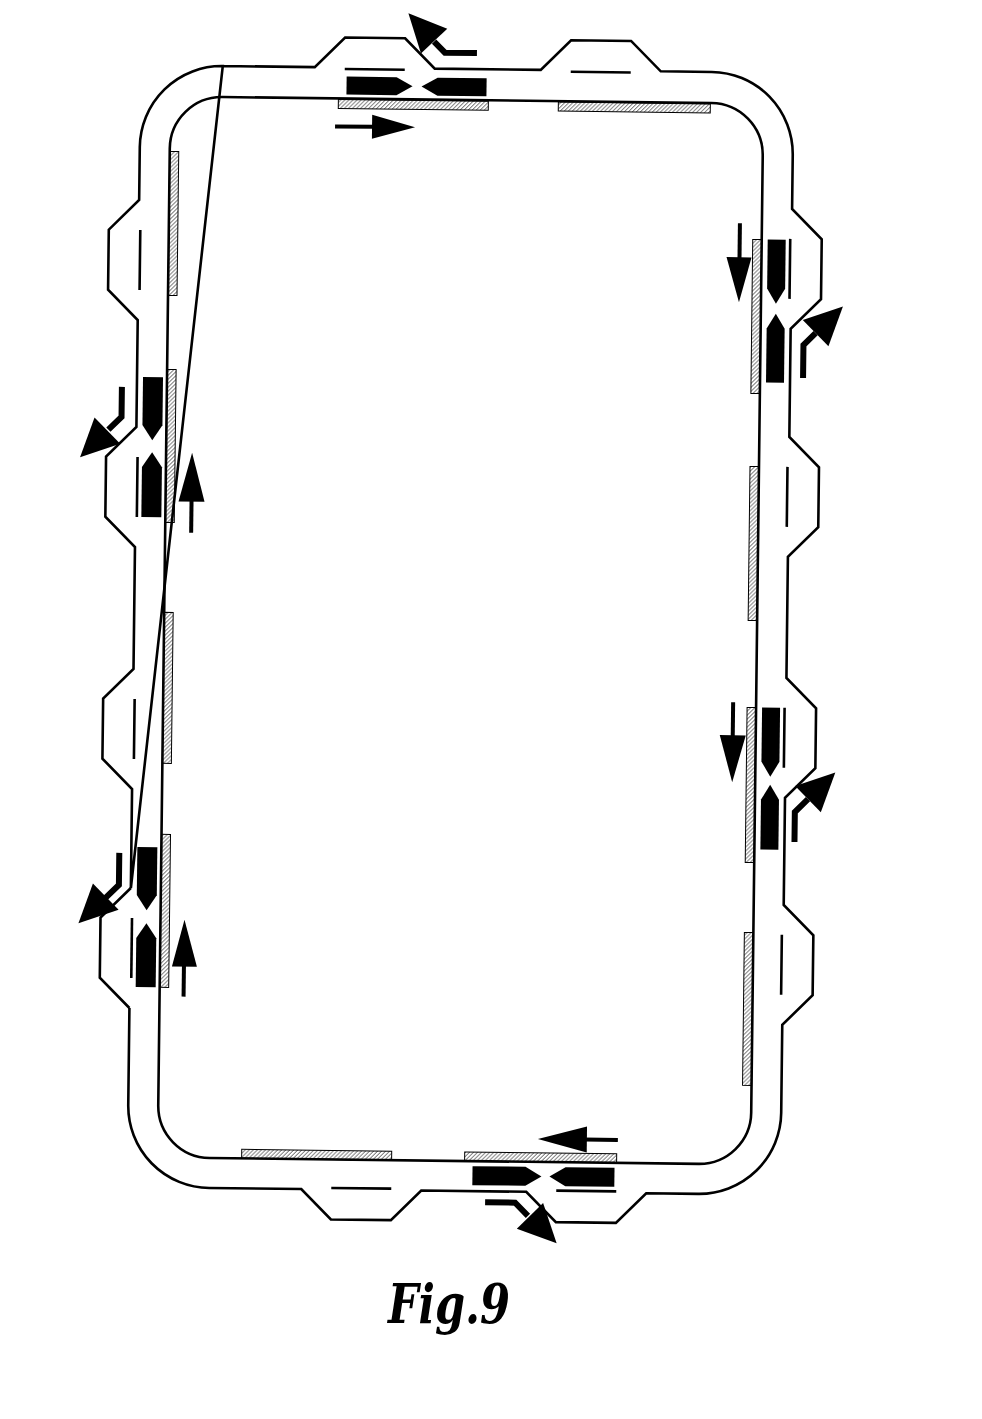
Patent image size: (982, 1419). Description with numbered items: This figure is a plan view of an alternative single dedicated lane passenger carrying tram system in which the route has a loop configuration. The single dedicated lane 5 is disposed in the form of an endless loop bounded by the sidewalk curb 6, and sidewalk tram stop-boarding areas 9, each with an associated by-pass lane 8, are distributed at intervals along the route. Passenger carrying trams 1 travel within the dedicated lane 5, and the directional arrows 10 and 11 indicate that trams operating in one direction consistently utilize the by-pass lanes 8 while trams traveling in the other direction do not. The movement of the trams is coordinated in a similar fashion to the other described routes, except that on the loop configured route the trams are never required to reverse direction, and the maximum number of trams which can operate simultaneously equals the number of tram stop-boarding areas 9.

The passenger carrying tram 1 is at (160, 886).
The single dedicated lane 5 is at (158, 1054).
The sidewalk curb 6 is at (164, 819).
The by-pass lane 8 is at (124, 957).
The sidewalk tram stop-boarding area 9 is at (176, 852).
The directional arrow 10 is at (121, 889).
The directional arrow 11 is at (191, 976).